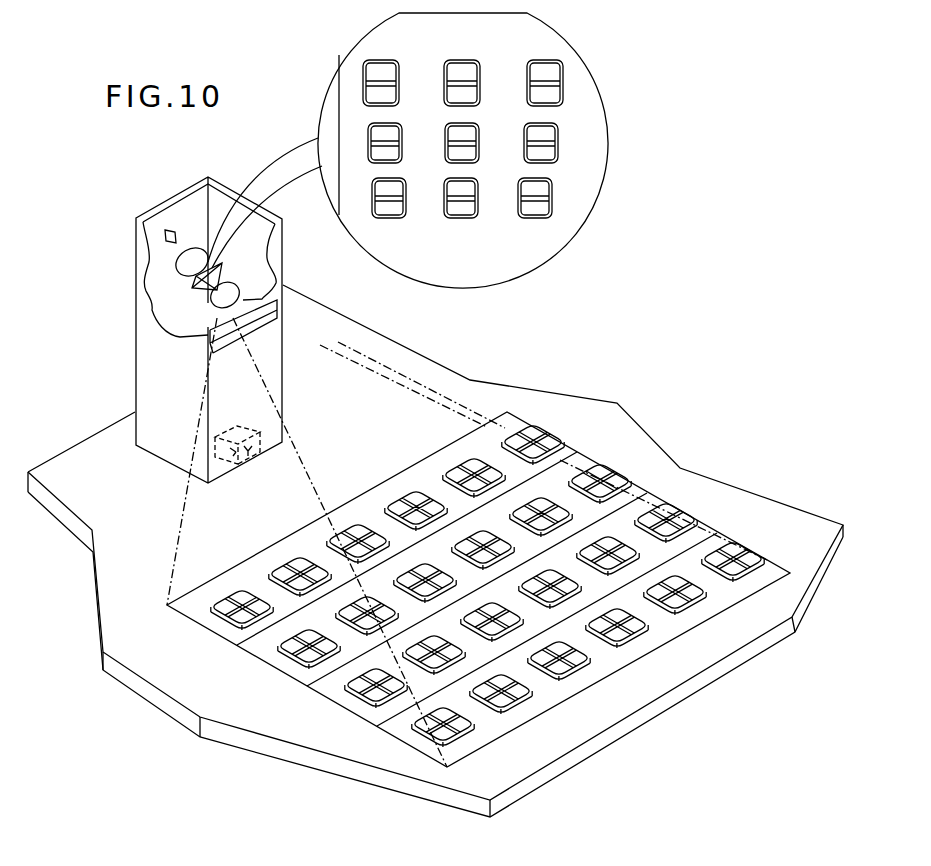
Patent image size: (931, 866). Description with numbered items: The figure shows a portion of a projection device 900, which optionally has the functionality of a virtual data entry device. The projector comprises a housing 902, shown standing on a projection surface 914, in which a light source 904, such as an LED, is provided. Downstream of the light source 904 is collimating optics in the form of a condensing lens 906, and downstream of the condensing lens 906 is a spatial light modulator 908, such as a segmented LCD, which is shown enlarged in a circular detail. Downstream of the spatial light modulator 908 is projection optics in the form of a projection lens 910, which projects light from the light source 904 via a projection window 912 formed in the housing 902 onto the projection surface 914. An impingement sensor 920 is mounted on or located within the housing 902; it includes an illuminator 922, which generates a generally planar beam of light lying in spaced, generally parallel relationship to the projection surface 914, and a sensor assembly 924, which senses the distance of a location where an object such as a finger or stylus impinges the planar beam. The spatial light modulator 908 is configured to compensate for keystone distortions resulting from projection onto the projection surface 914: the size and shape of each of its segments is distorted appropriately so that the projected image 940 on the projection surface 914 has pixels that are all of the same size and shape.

The projection device 900 is at (69, 259).
The housing 902 is at (137, 371).
The light source 904 is at (192, 250).
The condensing lens 906 is at (208, 258).
The spatial light modulator 908 is at (195, 285).
The projection lens 910 is at (245, 255).
The projection window 912 is at (270, 313).
The projection surface 914 is at (143, 570).
The impingement sensor 920 is at (233, 437).
The illuminator 922 is at (250, 452).
The sensor assembly 924 is at (235, 453).
The projected image 940 is at (665, 632).